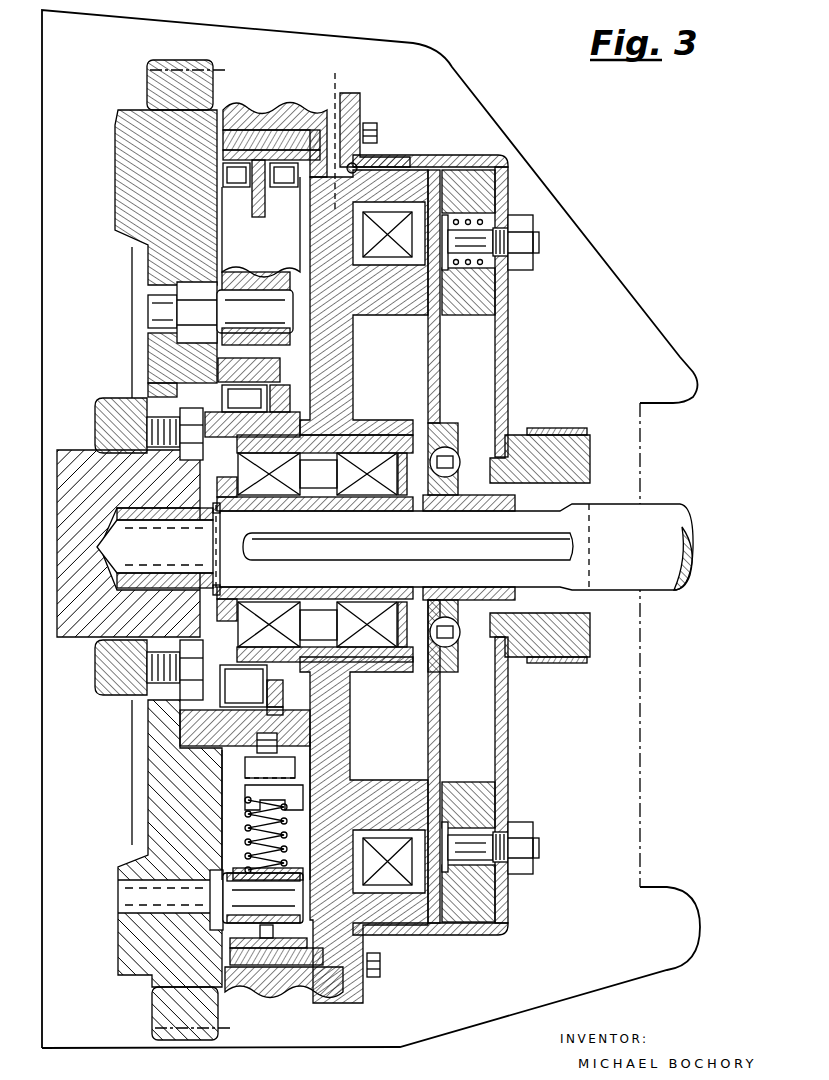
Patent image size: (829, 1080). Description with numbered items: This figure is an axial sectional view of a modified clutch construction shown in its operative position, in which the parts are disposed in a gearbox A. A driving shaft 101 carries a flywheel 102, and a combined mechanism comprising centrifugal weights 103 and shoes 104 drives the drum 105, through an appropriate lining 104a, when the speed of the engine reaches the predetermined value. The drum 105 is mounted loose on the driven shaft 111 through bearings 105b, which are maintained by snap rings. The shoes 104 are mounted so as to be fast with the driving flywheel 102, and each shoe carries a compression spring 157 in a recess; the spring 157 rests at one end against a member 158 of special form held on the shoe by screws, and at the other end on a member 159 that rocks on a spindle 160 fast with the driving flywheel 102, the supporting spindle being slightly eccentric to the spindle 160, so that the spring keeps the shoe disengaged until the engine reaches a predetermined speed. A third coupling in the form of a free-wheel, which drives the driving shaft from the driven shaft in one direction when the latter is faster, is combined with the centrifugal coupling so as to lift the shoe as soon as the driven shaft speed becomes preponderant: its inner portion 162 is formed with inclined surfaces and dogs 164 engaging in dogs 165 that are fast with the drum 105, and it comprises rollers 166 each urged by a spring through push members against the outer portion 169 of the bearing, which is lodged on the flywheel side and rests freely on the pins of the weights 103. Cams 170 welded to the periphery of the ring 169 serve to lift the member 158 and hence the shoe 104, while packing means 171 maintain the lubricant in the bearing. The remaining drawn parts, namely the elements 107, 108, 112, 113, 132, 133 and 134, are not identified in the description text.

The gearbox A is at (540, 178).
The driving shaft 101 is at (107, 408).
The flywheel 102 is at (127, 143).
The centrifugal weights 103 is at (245, 252).
The shoes 104 is at (292, 155).
The lining 104a is at (300, 960).
The drum 105 is at (263, 112).
The bearings 105b is at (360, 470).
The coil 107 is at (395, 880).
The housing plate 108 is at (432, 335).
The driven shaft 111 is at (620, 575).
The rotor 112 is at (480, 815).
The bolt 113 is at (185, 330).
The flange 132 is at (553, 430).
The cover wall 133 is at (502, 722).
The seal 134 is at (350, 82).
The compression spring 157 is at (245, 822).
The member 158 is at (252, 765).
The member 159 is at (300, 873).
The spindle 160 is at (125, 900).
The inner portion 162 is at (232, 430).
The dogs 164 is at (292, 675).
The dogs 165 is at (282, 683).
The rollers 166 is at (252, 393).
The outer portion 169 is at (223, 367).
The cams 170 is at (280, 748).
The packing means 171 is at (270, 700).